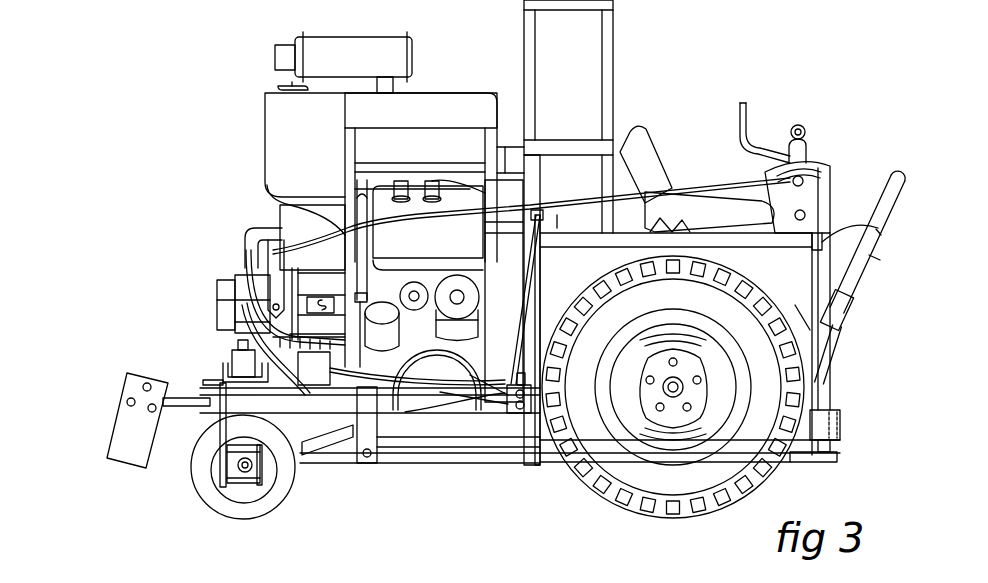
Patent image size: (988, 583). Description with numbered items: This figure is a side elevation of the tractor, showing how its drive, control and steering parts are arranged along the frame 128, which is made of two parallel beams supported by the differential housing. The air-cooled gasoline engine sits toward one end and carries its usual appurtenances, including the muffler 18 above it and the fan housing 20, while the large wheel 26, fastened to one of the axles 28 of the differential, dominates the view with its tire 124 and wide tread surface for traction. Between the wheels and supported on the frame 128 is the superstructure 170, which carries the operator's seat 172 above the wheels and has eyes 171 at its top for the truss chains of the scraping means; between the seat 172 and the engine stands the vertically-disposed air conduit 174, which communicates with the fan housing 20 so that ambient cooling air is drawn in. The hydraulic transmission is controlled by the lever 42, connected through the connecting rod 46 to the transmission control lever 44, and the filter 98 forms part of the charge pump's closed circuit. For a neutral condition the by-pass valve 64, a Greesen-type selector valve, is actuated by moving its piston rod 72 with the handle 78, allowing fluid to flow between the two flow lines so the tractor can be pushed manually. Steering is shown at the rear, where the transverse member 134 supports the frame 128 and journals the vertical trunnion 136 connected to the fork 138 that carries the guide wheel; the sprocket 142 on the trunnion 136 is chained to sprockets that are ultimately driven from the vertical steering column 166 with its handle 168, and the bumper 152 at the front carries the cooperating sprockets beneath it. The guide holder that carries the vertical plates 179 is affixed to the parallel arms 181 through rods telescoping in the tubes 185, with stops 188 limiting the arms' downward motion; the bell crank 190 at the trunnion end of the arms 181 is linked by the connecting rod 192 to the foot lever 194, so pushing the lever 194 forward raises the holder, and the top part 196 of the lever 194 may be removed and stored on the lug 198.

The muffler 18 is at (334, 44).
The fan housing 20 is at (518, 291).
The wheel 26 is at (704, 520).
The axles 28 is at (673, 394).
The lever 42 is at (806, 148).
The transmission control lever 44 is at (248, 253).
The connecting rod 46 is at (420, 220).
The by-pass valve 64 is at (516, 416).
The piston rod 72 is at (508, 364).
The handle 78 is at (545, 228).
The filter 98 is at (326, 377).
The tire 124 is at (632, 478).
The frame 128 is at (452, 426).
The transverse member 134 is at (235, 383).
The vertical trunnion 136 is at (225, 355).
The fork 138 is at (245, 478).
The sprocket 142 is at (203, 383).
The bumper 152 is at (840, 430).
The steering column 166 is at (832, 205).
The handle 168 is at (748, 116).
The superstructure 170 is at (793, 305).
The eyes 171 is at (878, 228).
The operator's seat 172 is at (640, 148).
The air conduit 174 is at (578, 165).
The vertical plates 179 is at (116, 445).
The parallel arms 181 is at (298, 578).
The tubes 185 is at (210, 403).
The stops 188 is at (322, 443).
The bell crank 190 is at (383, 450).
The connecting rod 192 is at (462, 456).
The foot lever 194 is at (834, 351).
The top part 196 is at (868, 241).
The lug 198 is at (559, 229).